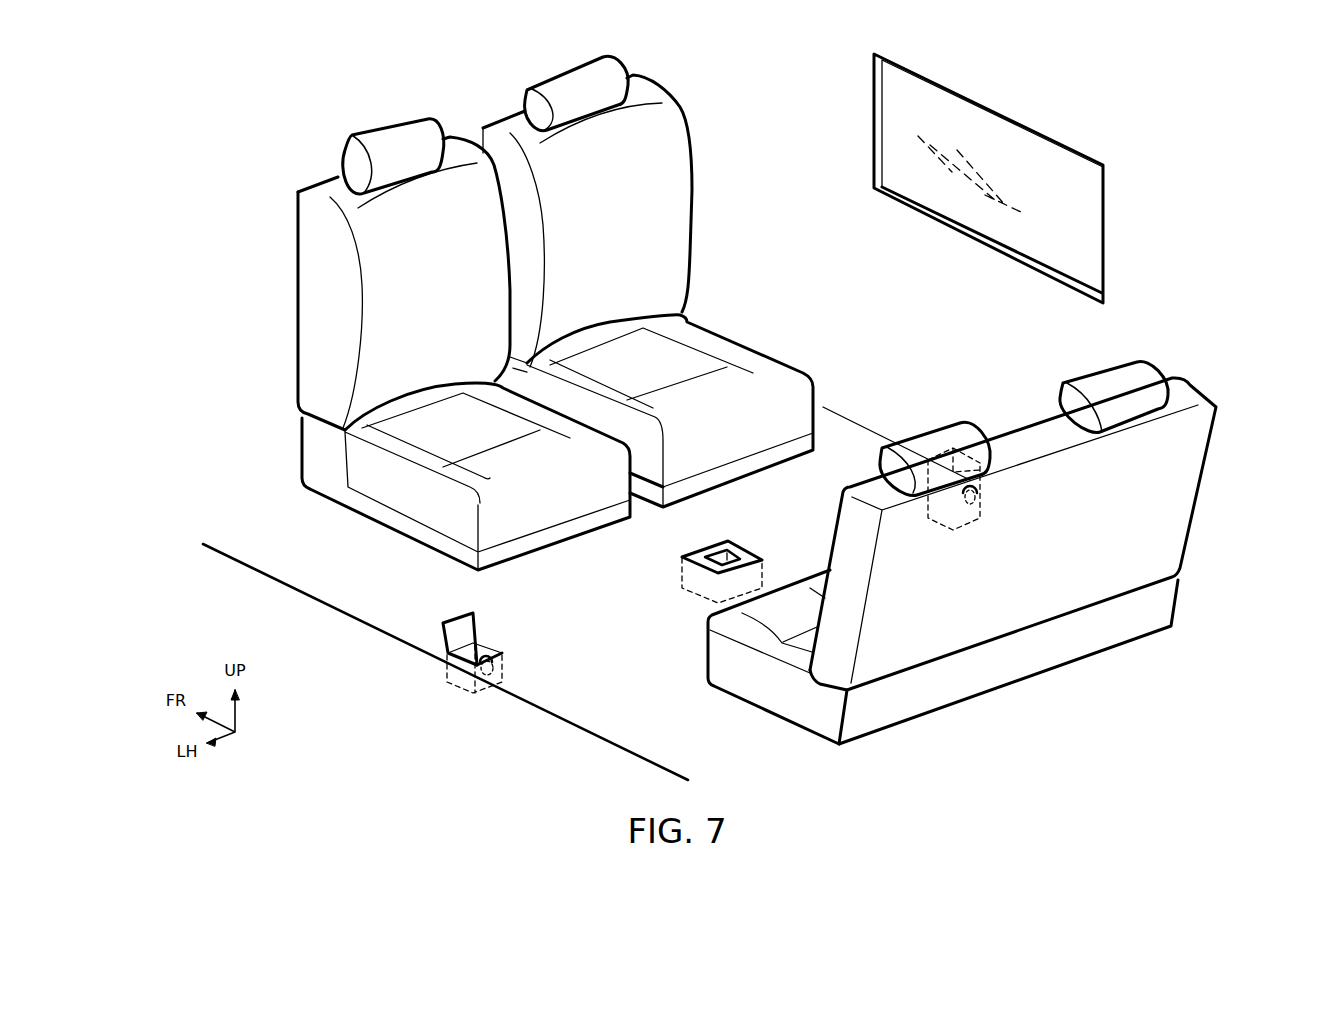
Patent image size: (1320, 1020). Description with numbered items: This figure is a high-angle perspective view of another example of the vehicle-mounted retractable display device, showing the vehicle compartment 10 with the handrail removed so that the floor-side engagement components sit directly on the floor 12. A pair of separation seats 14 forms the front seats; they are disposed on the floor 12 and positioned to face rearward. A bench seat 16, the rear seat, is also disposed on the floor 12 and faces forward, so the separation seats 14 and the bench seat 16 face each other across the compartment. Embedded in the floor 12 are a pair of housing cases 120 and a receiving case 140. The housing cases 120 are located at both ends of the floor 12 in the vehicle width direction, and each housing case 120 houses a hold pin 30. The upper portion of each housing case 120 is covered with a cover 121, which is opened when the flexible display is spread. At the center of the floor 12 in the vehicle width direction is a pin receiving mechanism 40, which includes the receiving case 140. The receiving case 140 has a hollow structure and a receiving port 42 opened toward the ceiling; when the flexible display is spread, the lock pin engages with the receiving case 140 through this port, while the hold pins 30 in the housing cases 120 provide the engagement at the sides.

The vehicle compartment 10 is at (810, 120).
The floor 12 is at (313, 570).
The separation seat 14 is at (332, 182).
The bench seat 16 is at (1184, 468).
The hold pin 30 is at (1011, 494).
The pin receiving mechanism 40 is at (695, 552).
The receiving port 42 is at (723, 550).
The housing case 120 is at (943, 448).
The cover 121 is at (450, 628).
The receiving case 140 is at (740, 553).